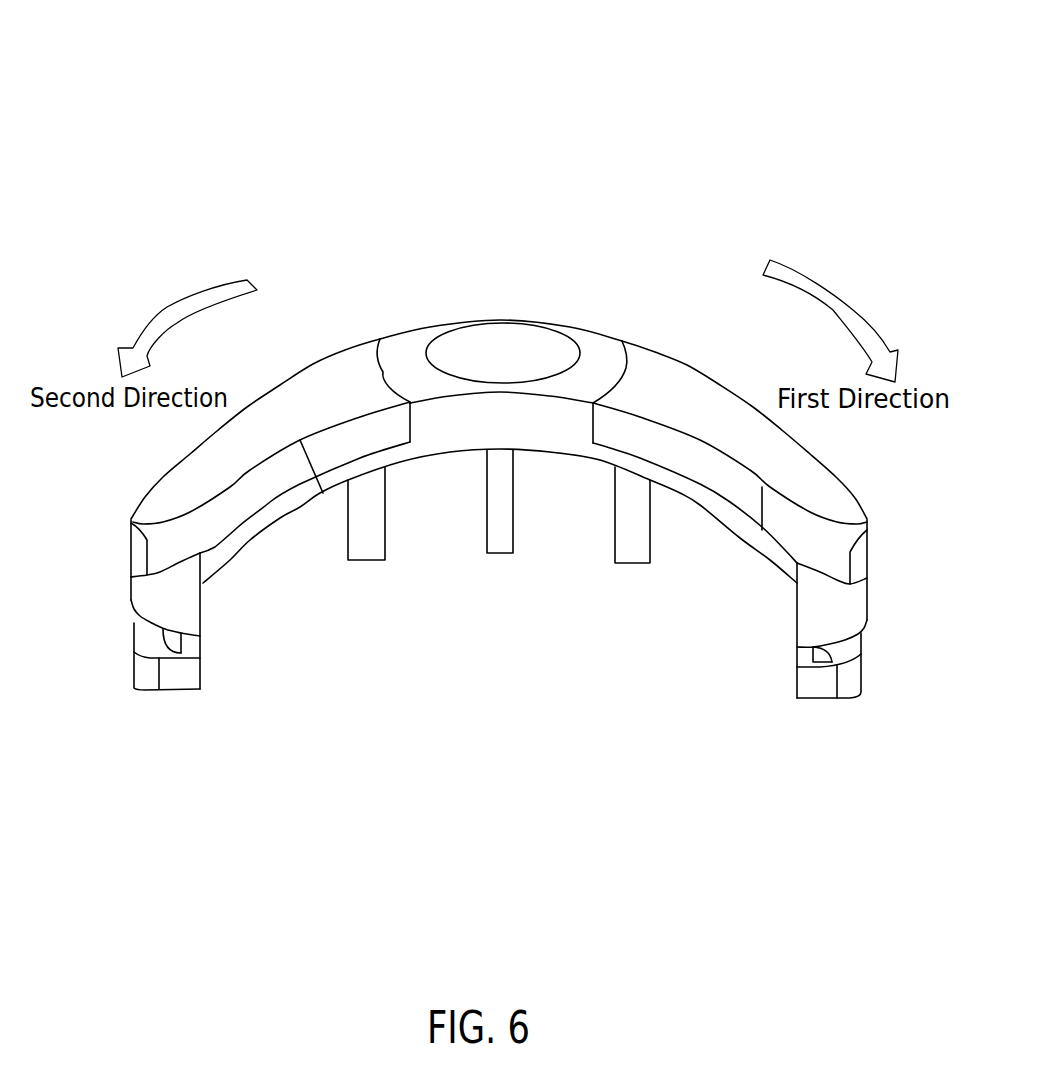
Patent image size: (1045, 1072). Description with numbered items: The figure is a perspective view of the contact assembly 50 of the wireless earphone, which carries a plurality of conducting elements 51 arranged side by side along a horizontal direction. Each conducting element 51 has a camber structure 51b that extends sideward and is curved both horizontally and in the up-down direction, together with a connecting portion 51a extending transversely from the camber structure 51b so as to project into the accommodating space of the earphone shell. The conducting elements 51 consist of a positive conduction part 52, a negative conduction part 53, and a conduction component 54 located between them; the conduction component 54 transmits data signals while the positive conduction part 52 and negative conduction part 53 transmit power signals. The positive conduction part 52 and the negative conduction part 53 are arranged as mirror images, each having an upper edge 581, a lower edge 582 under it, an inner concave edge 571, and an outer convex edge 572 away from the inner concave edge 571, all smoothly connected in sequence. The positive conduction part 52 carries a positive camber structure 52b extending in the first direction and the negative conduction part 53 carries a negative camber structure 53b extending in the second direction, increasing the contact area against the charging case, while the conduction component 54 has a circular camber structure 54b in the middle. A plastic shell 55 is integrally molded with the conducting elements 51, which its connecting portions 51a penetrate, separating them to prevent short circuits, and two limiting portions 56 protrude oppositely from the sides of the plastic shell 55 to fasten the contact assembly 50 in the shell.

The contact assembly 50 is at (88, 53).
The conducting elements 51 is at (499, 554).
The connecting portion 51a is at (632, 547).
The camber structure 51b is at (750, 450).
The positive conduction part 52 is at (744, 402).
The positive camber structure 52b is at (753, 410).
The negative conduction part 53 is at (255, 394).
The negative camber structure 53b is at (260, 407).
The conduction component 54 is at (543, 343).
The circular camber structure 54b is at (502, 337).
The plastic shell 55 is at (597, 333).
The limiting portions 56 is at (853, 683).
The inner concave edge 571 is at (382, 340).
The outer convex edge 572 is at (132, 516).
The upper edge 581 is at (323, 493).
The lower edge 582 is at (318, 360).